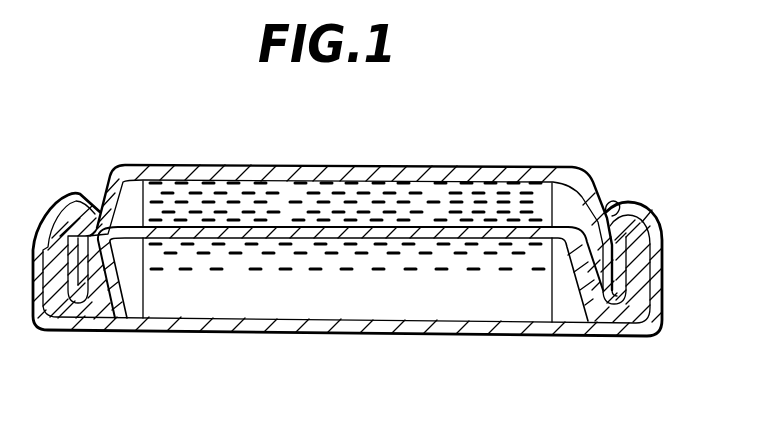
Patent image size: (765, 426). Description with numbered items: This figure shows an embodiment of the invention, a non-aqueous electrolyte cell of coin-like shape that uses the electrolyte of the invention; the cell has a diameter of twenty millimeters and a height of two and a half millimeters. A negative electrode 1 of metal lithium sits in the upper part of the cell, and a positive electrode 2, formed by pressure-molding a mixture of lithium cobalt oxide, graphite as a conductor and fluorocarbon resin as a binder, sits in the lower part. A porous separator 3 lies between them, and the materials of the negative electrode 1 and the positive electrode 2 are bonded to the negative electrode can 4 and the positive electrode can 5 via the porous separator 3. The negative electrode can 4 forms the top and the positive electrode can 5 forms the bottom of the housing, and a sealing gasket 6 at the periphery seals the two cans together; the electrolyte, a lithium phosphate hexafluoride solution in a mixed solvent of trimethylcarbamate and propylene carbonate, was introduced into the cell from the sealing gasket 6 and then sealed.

The negative electrode 1 is at (217, 187).
The positive electrode 2 is at (245, 297).
The porous separator 3 is at (302, 230).
The negative electrode can 4 is at (478, 177).
The positive electrode can 5 is at (473, 329).
The sealing gasket 6 is at (612, 198).